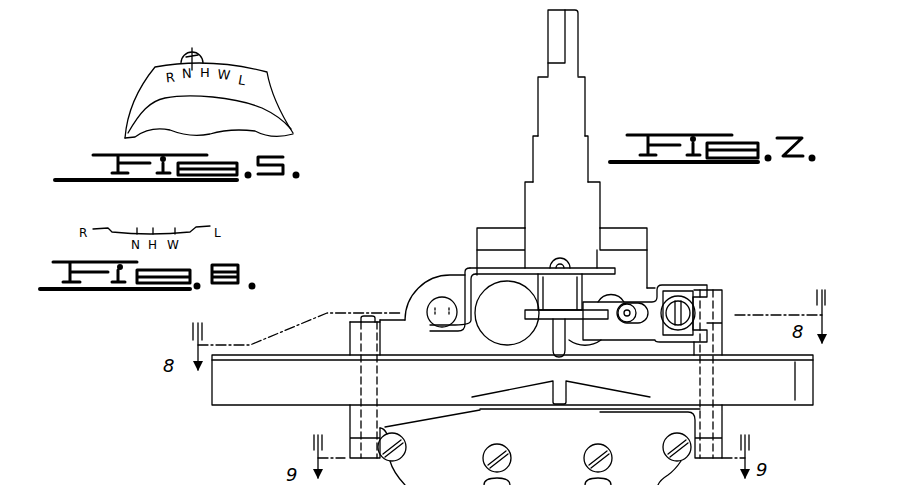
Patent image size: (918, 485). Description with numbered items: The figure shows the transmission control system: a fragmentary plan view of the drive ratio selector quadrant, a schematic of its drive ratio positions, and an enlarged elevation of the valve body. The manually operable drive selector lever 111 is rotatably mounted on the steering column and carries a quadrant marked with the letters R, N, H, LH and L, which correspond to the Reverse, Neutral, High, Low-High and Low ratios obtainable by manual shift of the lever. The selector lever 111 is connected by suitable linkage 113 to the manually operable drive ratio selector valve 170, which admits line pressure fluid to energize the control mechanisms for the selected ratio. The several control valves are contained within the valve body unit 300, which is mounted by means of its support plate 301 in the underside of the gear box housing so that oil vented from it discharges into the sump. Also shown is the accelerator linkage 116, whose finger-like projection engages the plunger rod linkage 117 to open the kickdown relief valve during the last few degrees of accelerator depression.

In FIG. 5, the drive selector lever 111 is at (196, 47).
In FIG. 7, the valve body unit 300 is at (616, 220).
In FIG. 7, the support plate 301 is at (282, 388).
In FIG. 7, the linkage 113 is at (462, 277).
In FIG. 7, the drive ratio selector valve 170 is at (422, 303).
In FIG. 7, the linkage 116 is at (538, 312).
In FIG. 7, the plunger rod linkage 117 is at (635, 308).